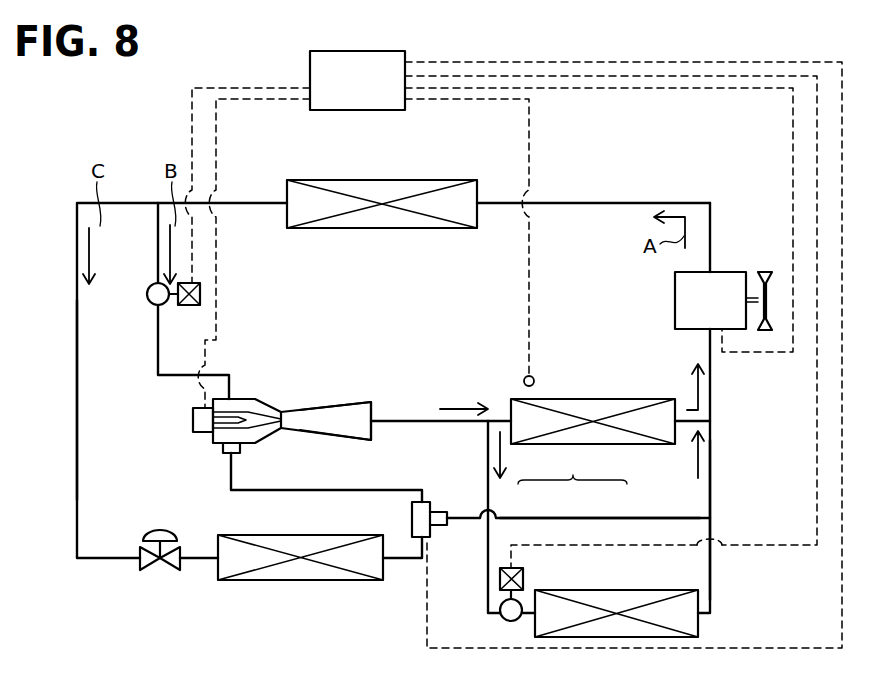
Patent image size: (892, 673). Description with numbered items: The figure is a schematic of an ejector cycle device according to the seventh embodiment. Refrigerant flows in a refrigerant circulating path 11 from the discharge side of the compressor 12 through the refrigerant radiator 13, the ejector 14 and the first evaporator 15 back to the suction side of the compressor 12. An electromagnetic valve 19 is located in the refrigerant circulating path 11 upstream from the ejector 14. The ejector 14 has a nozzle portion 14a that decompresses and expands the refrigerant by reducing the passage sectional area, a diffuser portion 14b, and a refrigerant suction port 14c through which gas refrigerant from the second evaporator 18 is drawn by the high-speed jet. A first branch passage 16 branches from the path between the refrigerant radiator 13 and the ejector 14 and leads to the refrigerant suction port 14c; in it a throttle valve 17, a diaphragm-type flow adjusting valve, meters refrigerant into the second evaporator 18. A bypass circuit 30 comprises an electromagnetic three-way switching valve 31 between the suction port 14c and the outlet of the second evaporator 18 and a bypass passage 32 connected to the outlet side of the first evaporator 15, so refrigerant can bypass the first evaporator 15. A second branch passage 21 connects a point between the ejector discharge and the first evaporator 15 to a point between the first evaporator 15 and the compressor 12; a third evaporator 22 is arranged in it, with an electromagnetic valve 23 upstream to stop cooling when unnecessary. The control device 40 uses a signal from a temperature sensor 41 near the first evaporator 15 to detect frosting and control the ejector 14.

The control device 40 is at (370, 51).
The refrigerant radiator 13 is at (370, 180).
The compressor 12 is at (722, 272).
The temperature sensor 41 is at (535, 380).
The first evaporator 15 is at (620, 399).
The electromagnetic valve 19 is at (168, 304).
The refrigerant circulating path 11 is at (158, 350).
The branch passage 16 is at (77, 384).
The ejector 14 is at (292, 420).
The nozzle portion 14a is at (250, 412).
The diffuser portion 14b is at (340, 437).
The refrigerant suction port 14c is at (238, 448).
The bypass circuit 30 is at (556, 495).
The electromagnetic three-way switching valve 31 is at (440, 512).
The bypass passage 32 is at (568, 518).
The second branch passage 21 is at (710, 525).
The throttle valve 17 is at (156, 572).
The second evaporator 18 is at (302, 580).
The third evaporator 22 is at (570, 590).
The electromagnetic valve 23 is at (505, 620).